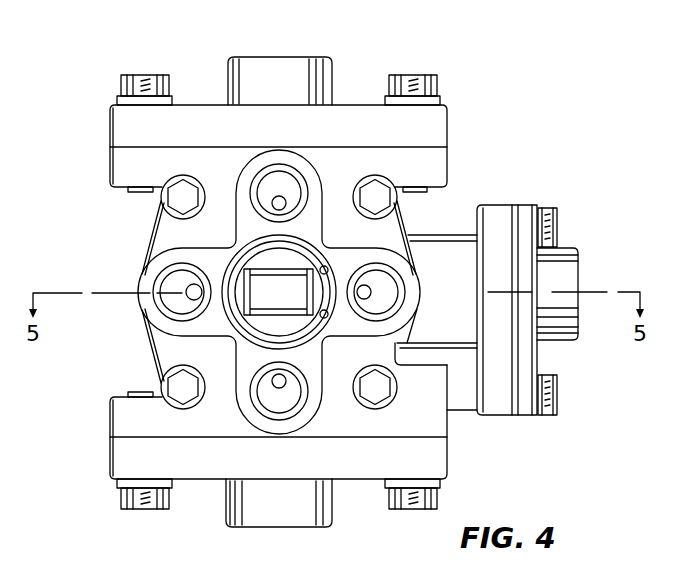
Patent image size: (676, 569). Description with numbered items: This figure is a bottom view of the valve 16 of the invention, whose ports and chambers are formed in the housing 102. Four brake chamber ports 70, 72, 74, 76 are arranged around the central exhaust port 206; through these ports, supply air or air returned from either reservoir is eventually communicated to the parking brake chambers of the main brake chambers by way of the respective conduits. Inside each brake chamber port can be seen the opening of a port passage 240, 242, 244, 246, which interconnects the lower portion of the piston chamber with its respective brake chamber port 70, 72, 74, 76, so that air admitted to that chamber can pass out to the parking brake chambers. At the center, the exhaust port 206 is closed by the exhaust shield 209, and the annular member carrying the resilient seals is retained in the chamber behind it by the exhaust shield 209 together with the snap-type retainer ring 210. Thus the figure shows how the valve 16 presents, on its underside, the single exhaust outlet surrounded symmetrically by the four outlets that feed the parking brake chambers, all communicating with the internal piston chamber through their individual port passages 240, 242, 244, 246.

The valve 16 is at (104, 170).
The housing 102 is at (447, 170).
The brake chamber port 70 is at (266, 177).
The port passage 240 is at (273, 207).
The exhaust port 206 is at (316, 247).
The snap-type retainer ring 210 is at (253, 320).
The exhaust shield 209 is at (263, 303).
The brake chamber port 76 is at (169, 277).
The port passage 246 is at (188, 298).
The brake chamber port 72 is at (391, 308).
The port passage 242 is at (366, 291).
The brake chamber port 74 is at (261, 395).
The port passage 244 is at (287, 377).